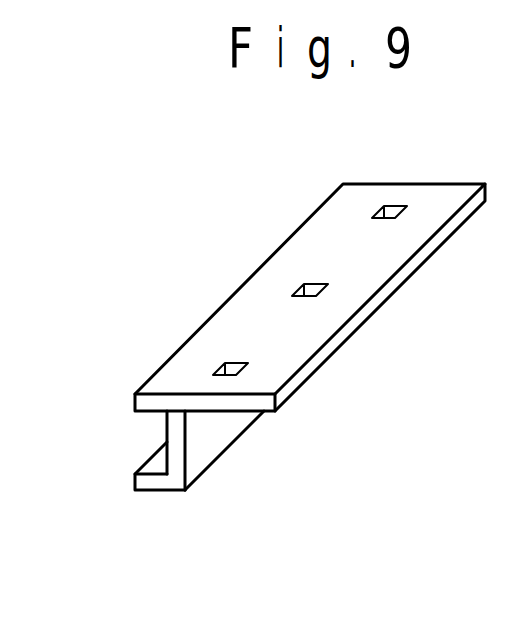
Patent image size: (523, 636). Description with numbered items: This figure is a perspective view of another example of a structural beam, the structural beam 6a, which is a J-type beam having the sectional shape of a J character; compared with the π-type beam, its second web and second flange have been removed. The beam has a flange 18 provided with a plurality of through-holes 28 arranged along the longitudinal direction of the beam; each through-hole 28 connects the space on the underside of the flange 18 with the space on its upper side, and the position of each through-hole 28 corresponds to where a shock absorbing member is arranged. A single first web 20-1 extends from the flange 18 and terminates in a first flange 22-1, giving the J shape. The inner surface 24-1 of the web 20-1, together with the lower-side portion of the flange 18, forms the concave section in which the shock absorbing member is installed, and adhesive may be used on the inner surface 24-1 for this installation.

The structural beam 6a is at (88, 233).
The flange 18 is at (136, 403).
The through-hole 28 is at (308, 290).
The first web 20-1 is at (167, 420).
The first flange 22-1 is at (152, 486).
The inner surface 24-1 is at (205, 457).